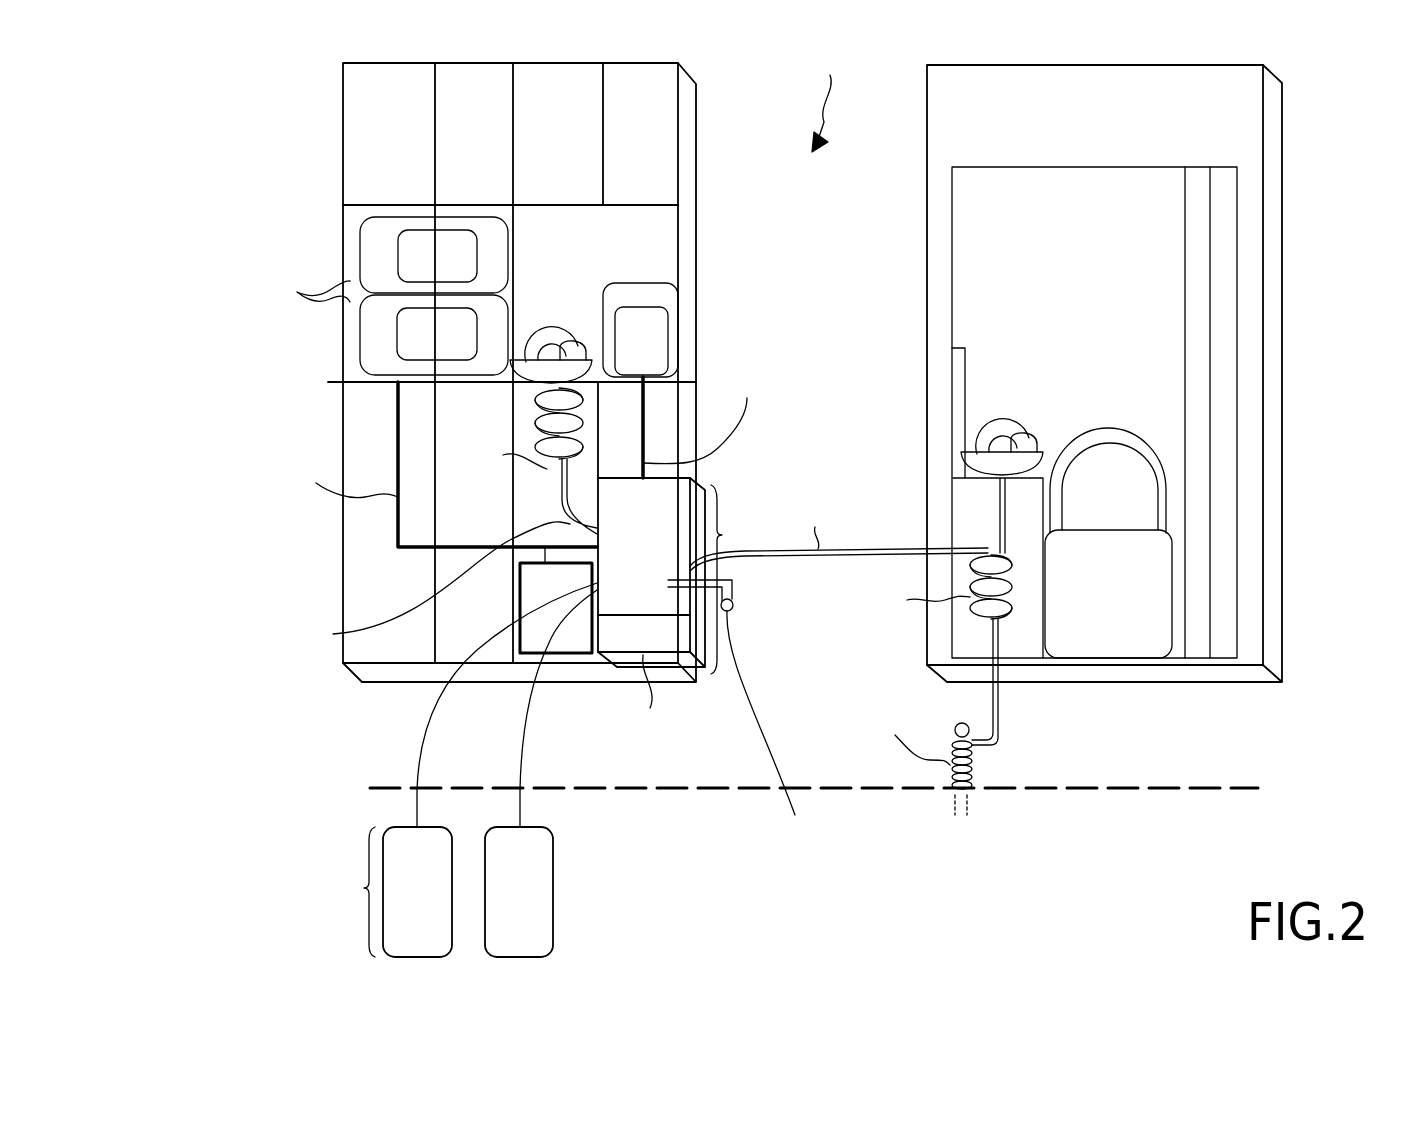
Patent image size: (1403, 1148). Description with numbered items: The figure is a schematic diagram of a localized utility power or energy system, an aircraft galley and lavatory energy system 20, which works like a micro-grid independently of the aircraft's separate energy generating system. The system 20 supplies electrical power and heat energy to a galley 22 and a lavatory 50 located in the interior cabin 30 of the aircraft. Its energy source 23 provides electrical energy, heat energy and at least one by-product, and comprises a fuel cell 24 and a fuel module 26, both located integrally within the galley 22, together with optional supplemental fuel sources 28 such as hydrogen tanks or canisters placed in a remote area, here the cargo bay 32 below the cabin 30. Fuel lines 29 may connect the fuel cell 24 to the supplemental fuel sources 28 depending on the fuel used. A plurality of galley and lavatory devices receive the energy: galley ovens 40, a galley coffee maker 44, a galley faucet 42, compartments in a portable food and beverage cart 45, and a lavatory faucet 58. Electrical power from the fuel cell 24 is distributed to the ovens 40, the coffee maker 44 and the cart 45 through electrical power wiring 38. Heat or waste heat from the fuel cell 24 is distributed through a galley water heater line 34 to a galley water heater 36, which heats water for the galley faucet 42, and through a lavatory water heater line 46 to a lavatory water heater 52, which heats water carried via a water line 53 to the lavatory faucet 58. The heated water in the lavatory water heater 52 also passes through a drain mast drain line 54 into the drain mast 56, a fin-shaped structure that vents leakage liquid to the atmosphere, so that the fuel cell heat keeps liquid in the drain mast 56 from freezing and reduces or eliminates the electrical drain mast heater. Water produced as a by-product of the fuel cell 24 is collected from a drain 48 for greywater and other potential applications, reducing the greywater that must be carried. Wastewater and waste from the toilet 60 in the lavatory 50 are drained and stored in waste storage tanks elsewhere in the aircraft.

The aircraft galley and lavatory energy system 20 is at (828, 98).
The galley 22 is at (530, 105).
The energy source 23 is at (541, 721).
The fuel cell 24 is at (634, 572).
The fuel module 26 is at (688, 723).
The supplemental fuel source 28 is at (533, 908).
The fuel lines 29 is at (517, 700).
The cabin 30 is at (1237, 755).
The cargo bay 32 is at (1262, 832).
The galley water heater line 34 is at (570, 524).
The galley water heater 36 is at (548, 470).
The electrical power wiring 38 is at (260, 497).
The galley ovens 40 is at (383, 356).
The galley faucet 42 is at (553, 332).
The galley coffee maker 44 is at (662, 298).
The portable food and beverage cart 45 is at (572, 655).
The lavatory water heater line 46 is at (762, 560).
The drain 48 is at (735, 601).
The lavatory 50 is at (1257, 93).
The lavatory water heater 52 is at (1012, 618).
The water line 53 is at (998, 526).
The drain mast drain line 54 is at (1000, 702).
The drain mast 56 is at (973, 767).
The lavatory faucet 58 is at (1028, 428).
The toilet 60 is at (1142, 450).